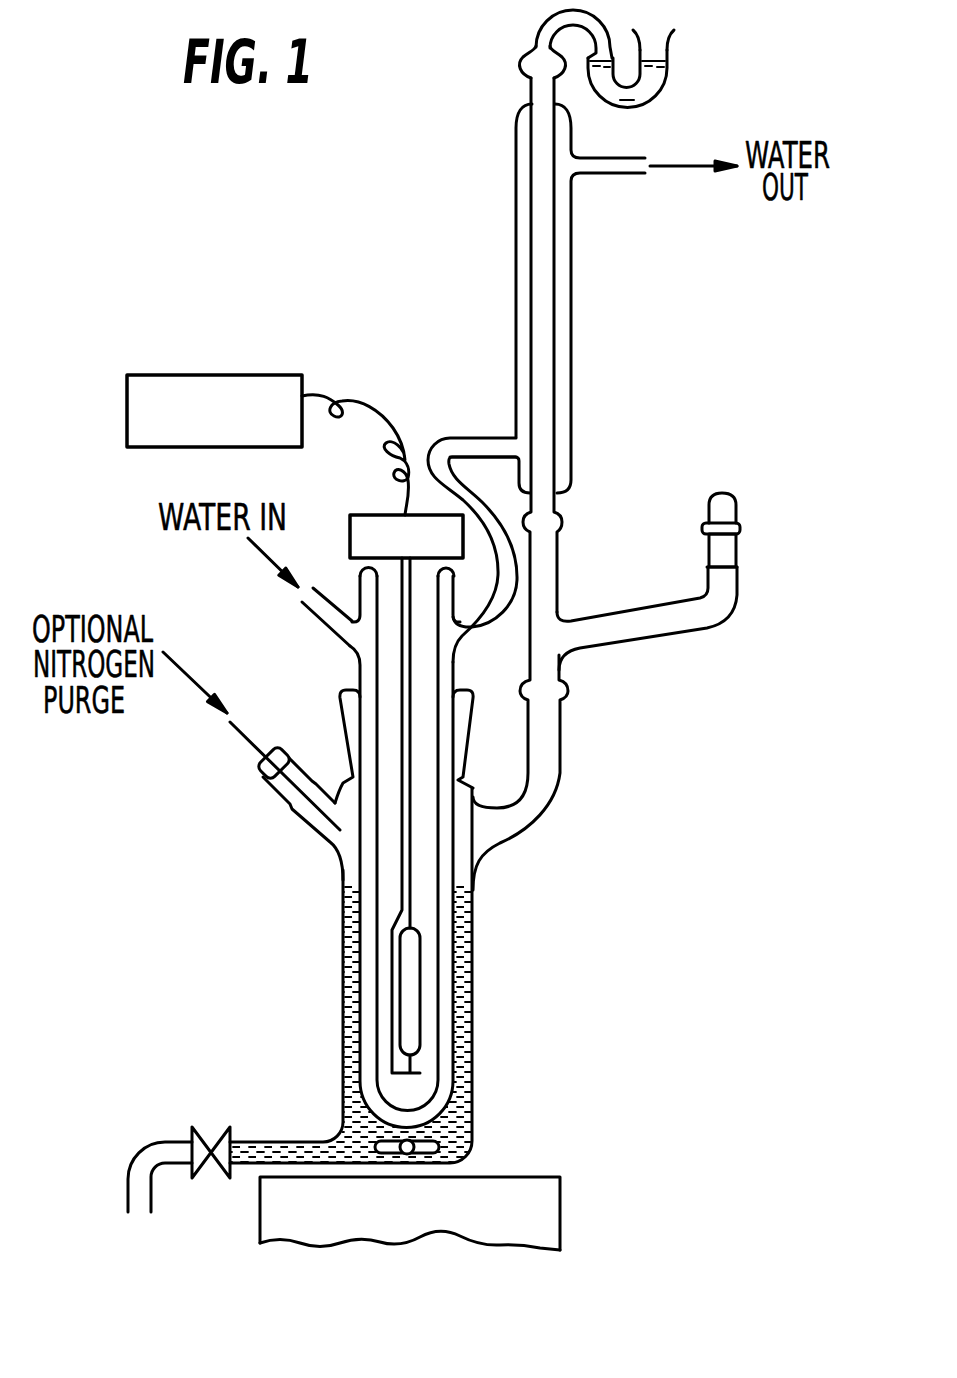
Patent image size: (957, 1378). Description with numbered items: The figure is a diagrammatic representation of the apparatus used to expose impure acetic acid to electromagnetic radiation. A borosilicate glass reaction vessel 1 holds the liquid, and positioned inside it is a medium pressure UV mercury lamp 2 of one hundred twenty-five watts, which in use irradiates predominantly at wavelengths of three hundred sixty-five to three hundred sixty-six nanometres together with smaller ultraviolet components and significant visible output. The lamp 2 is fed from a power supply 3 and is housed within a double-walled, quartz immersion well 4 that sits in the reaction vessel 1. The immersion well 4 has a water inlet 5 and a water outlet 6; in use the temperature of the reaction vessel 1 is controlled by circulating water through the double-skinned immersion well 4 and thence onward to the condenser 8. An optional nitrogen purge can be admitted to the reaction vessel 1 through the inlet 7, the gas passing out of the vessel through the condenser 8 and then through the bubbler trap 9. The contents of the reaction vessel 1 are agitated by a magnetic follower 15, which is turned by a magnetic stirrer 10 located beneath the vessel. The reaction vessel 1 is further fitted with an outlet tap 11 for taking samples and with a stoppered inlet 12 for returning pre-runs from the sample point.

The reaction vessel 1 is at (478, 1113).
The UV mercury lamp 2 is at (412, 1000).
The power supply 3 is at (222, 430).
The immersion well 4 is at (447, 873).
The water inlet 5 is at (311, 617).
The water outlet 6 is at (440, 452).
The nitrogen purge inlet 7 is at (257, 754).
The condenser 8 is at (572, 339).
The bubbler trap 9 is at (668, 67).
The magnetic stirrer 10 is at (532, 1212).
The outlet tap 11 is at (192, 1131).
The stoppered inlet 12 is at (722, 548).
The magnetic follower 15 is at (442, 1145).